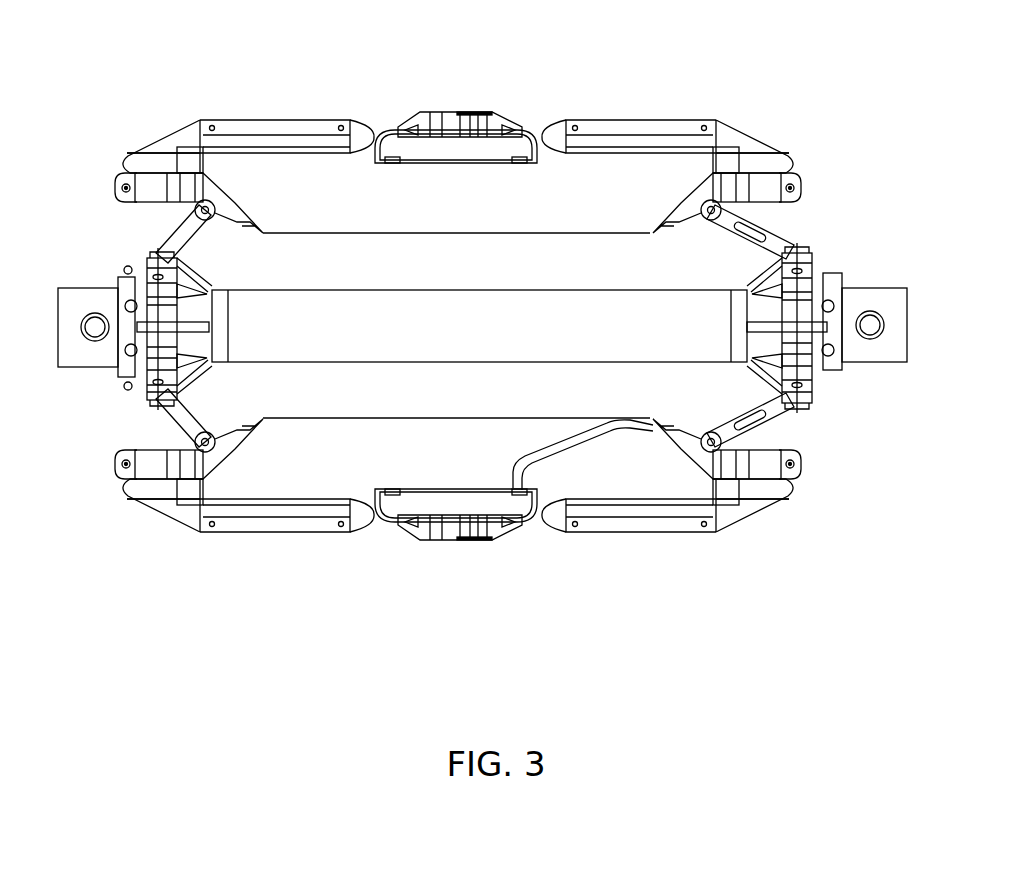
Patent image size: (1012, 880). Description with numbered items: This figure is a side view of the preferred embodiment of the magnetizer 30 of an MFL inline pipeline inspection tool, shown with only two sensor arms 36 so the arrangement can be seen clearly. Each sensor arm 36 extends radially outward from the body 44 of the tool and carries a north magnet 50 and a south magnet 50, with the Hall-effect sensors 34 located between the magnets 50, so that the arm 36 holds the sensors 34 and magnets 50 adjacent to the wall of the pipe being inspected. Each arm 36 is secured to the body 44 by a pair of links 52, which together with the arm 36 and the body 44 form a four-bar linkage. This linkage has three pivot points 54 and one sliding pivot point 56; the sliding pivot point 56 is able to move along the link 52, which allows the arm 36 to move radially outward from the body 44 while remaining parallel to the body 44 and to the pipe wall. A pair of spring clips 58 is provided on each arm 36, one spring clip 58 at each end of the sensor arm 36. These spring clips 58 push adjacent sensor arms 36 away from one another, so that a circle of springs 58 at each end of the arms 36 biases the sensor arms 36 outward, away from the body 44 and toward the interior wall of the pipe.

The magnetizer 30 is at (187, 636).
The Hall-effect sensor 34 is at (455, 111).
The sensor arm 36 is at (550, 197).
The body 44 is at (888, 310).
The magnet 50 is at (270, 118).
The link 52 is at (182, 235).
The pivot point 54 is at (196, 212).
The sliding pivot point 56 is at (795, 406).
The spring clip 58 is at (180, 187).